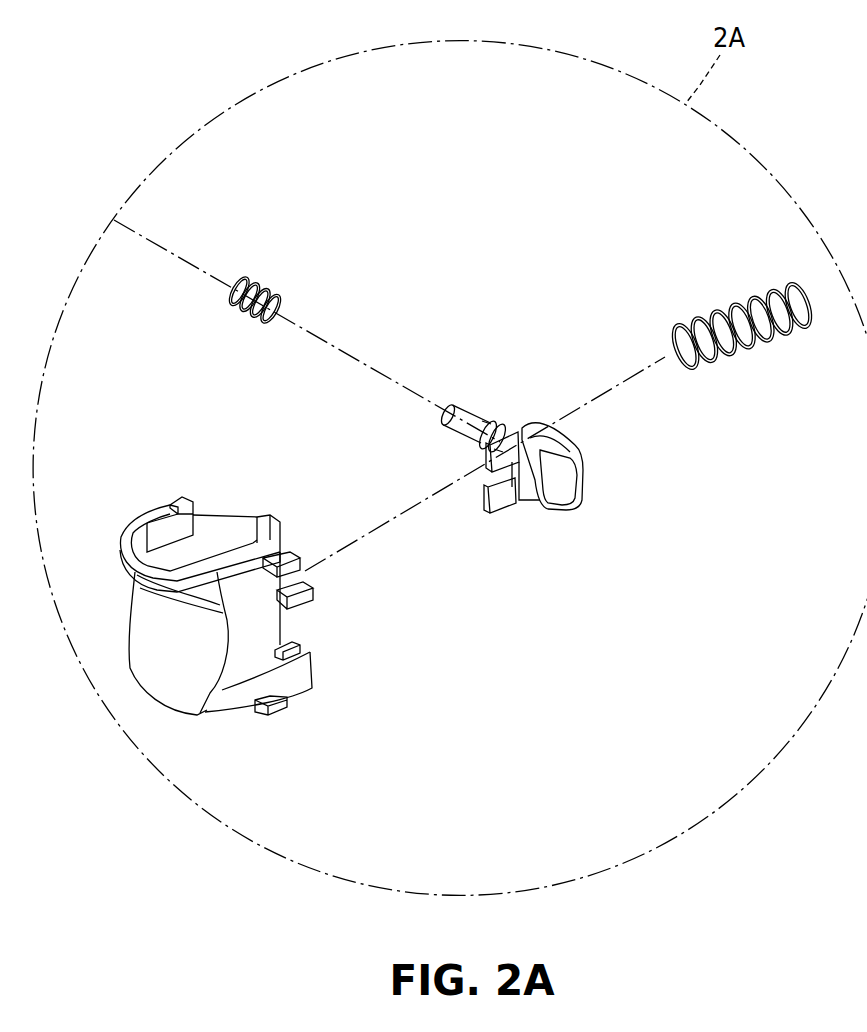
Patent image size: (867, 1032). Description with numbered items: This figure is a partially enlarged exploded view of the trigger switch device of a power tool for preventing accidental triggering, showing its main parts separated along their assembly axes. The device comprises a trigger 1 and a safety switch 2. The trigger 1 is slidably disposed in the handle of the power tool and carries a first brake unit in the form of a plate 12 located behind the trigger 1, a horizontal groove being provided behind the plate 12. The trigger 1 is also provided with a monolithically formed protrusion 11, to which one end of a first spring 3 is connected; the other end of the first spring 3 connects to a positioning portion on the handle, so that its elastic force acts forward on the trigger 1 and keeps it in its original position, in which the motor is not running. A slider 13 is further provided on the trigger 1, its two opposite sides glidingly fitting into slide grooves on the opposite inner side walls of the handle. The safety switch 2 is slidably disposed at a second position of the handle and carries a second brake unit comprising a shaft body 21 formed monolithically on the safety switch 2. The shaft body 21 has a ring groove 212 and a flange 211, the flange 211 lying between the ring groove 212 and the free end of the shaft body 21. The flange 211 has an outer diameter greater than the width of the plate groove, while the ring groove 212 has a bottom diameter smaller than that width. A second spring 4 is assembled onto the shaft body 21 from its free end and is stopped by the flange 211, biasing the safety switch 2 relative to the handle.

The trigger 1 is at (170, 660).
The protrusion 11 is at (313, 593).
The plate 12 is at (240, 525).
The slider 13 is at (278, 707).
The safety switch 2 is at (573, 500).
The shaft body 21 is at (446, 420).
The flange 211 is at (487, 427).
The ring groove 212 is at (512, 432).
The first spring 3 is at (765, 343).
The second spring 4 is at (265, 285).